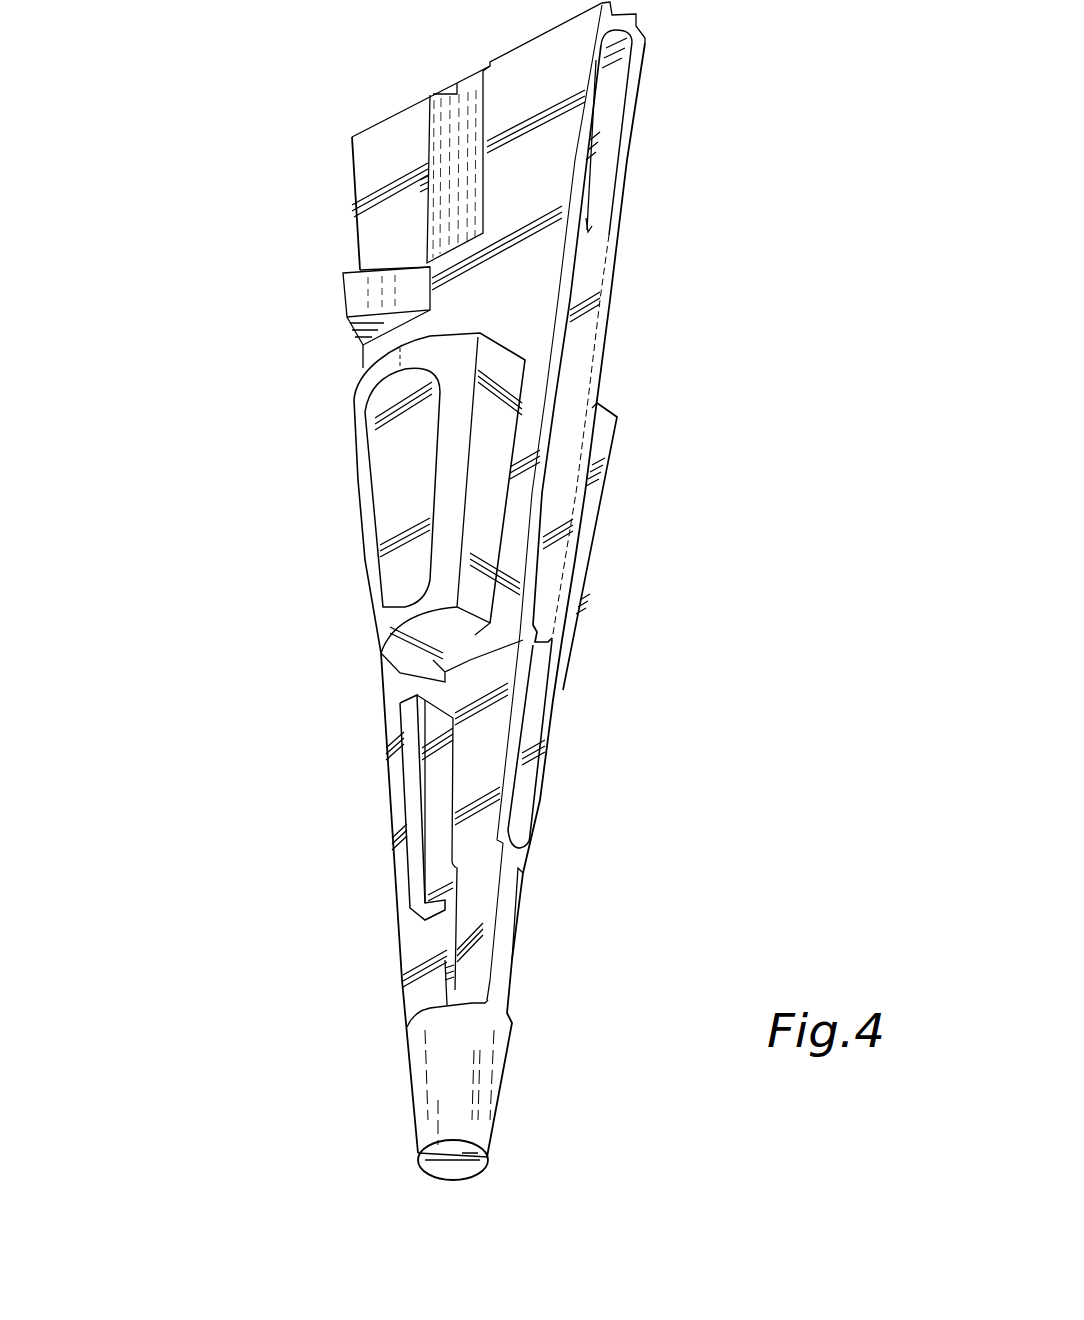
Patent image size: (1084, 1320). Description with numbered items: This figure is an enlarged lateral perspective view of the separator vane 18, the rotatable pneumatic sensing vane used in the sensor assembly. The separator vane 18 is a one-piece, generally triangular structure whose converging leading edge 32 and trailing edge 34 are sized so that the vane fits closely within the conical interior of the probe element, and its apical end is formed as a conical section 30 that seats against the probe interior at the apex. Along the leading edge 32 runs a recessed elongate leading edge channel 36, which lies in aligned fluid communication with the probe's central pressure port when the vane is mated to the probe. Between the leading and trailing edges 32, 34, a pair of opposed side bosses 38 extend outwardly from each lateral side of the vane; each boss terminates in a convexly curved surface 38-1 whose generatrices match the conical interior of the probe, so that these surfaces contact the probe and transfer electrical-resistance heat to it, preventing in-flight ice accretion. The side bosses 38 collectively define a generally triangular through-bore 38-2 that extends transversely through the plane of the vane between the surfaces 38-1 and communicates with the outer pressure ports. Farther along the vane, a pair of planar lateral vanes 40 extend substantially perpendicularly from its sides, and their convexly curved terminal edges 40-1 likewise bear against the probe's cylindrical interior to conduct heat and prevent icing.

The separator vane 18 is at (235, 200).
The conical section 30 is at (467, 1077).
The leading edge 32 is at (515, 903).
The trailing edge 34 is at (381, 700).
The leading edge channel 36 is at (604, 258).
The side bosses 38 is at (508, 465).
The convexly curved surface 38-1 is at (385, 377).
The through-bore 38-2 is at (390, 476).
The lateral vanes 40 is at (413, 866).
The terminal edges 40-1 is at (413, 802).